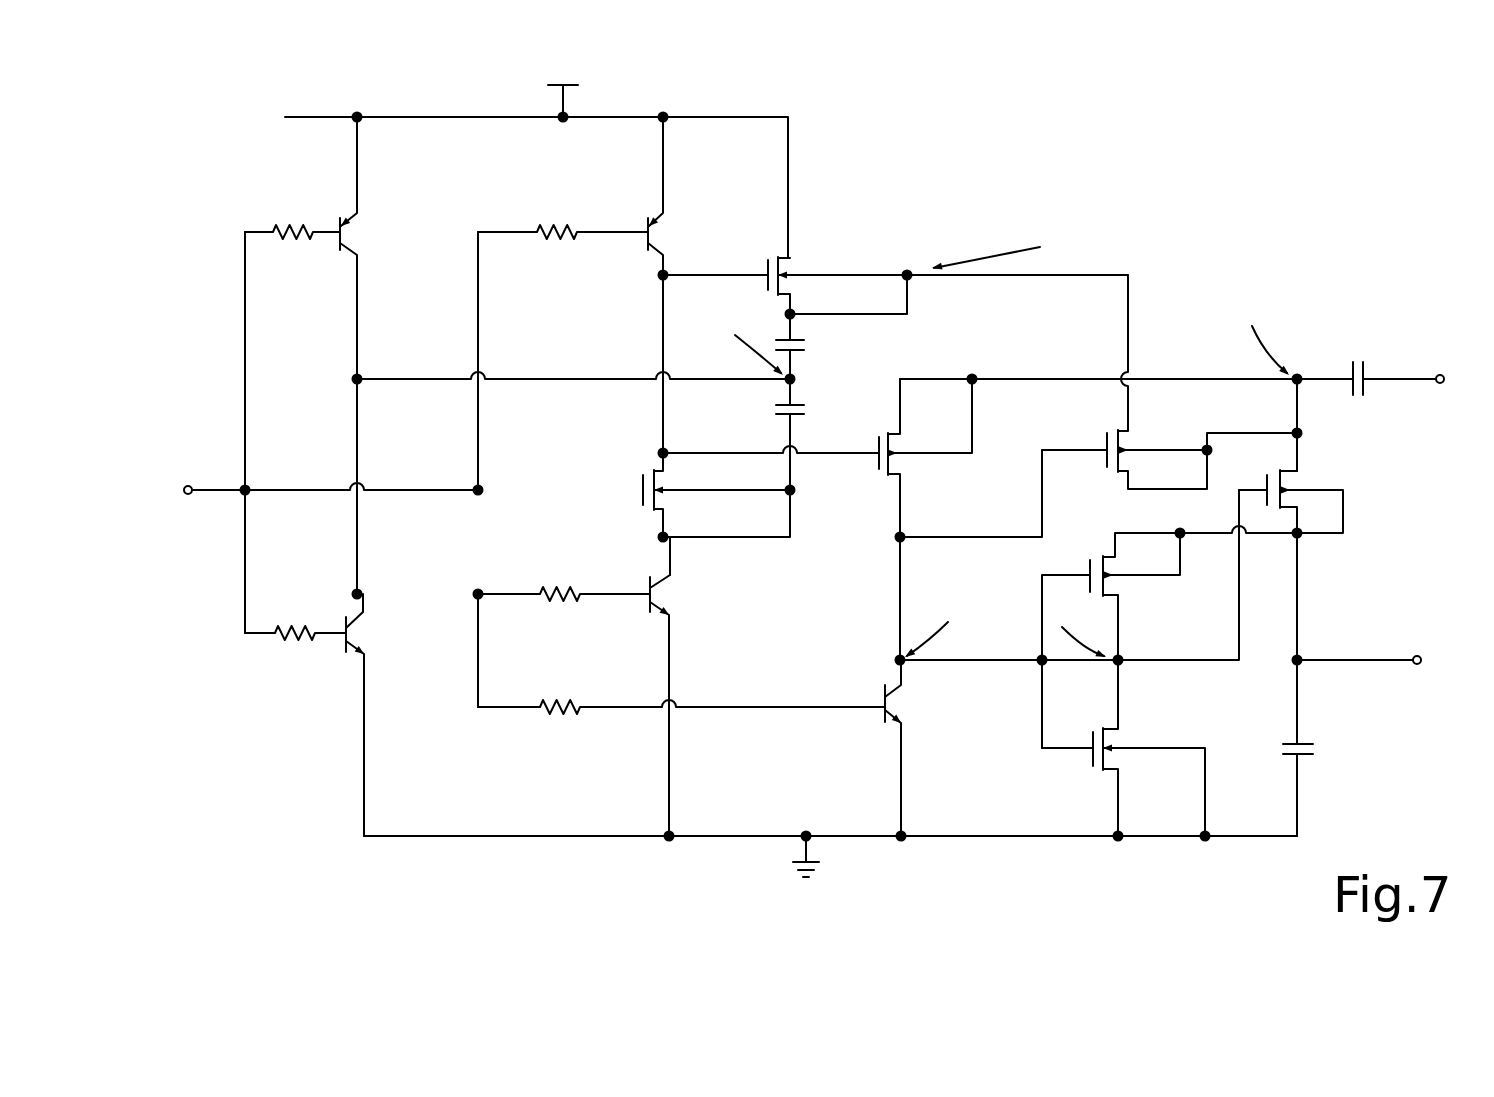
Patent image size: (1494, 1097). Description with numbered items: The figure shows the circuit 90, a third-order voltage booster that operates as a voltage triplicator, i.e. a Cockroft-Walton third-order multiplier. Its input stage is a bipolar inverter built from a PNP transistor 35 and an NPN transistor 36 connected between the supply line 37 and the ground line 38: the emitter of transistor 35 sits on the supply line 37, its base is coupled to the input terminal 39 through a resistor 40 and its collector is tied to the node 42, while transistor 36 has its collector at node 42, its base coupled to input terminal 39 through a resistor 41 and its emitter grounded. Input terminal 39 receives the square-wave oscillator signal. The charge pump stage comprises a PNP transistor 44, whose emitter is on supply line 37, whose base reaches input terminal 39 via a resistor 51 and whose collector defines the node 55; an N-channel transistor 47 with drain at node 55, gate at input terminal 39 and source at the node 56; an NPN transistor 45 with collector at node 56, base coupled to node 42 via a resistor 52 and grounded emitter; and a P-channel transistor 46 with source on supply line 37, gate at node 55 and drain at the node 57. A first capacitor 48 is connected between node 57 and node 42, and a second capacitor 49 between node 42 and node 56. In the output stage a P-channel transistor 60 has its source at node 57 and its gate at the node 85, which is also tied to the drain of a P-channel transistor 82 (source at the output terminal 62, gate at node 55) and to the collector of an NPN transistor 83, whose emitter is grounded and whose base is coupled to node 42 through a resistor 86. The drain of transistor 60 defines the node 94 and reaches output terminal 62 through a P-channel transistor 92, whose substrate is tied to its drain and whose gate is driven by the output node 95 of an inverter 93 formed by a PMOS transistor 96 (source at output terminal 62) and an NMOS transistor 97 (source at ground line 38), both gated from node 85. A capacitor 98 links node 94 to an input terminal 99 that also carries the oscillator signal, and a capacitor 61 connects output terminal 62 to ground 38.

The first PNP bipolar transistor 35 is at (350, 238).
The second NPN bipolar transistor 36 is at (360, 632).
The supply line 37 is at (697, 117).
The ground line 38 is at (870, 838).
The input terminal 39 is at (192, 486).
The resistor 40 is at (290, 245).
The resistor 41 is at (292, 645).
The node 42 is at (368, 375).
The third bipolar transistor 44 is at (656, 232).
The fourth bipolar transistor 45 is at (660, 598).
The first MOS transistor 46 is at (787, 264).
The second MOS transistor 47 is at (651, 512).
The first capacitor 48 is at (806, 347).
The second capacitor 49 is at (806, 408).
The resistor 51 is at (552, 225).
The resistor 52 is at (566, 605).
The node 55 is at (651, 289).
The node 56 is at (668, 540).
The node 57 is at (907, 270).
The P-channel MOS transistor 60 is at (1125, 446).
The capacitor 61 is at (1318, 752).
The output terminal 62 is at (1417, 666).
The P-channel MOS transistor 82 is at (897, 467).
The bipolar NPN transistor 83 is at (900, 712).
The node 85 is at (896, 660).
The resistor 86 is at (562, 716).
The circuit 90 is at (1184, 226).
The P-channel MOS transistor 92 is at (1290, 483).
The inverter 93 is at (1190, 841).
The node 94 is at (1298, 376).
The output node 95 is at (1122, 664).
The transistor 96 is at (1115, 584).
The transistor 97 is at (1110, 760).
The capacitor 98 is at (1357, 362).
The input terminal 99 is at (1440, 375).